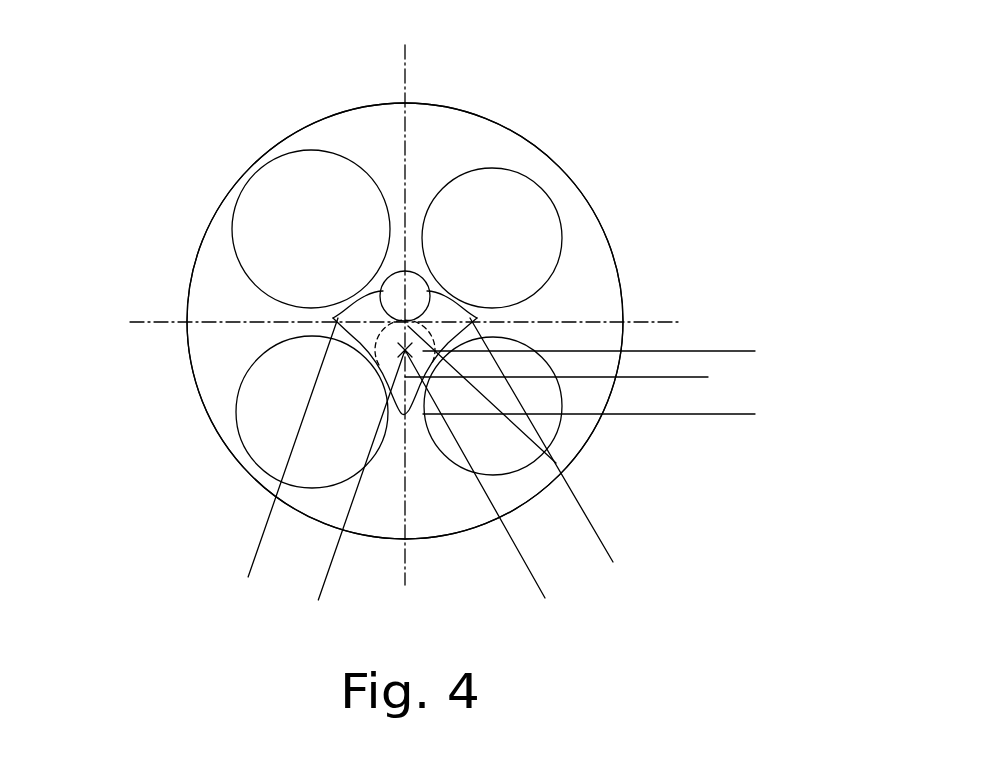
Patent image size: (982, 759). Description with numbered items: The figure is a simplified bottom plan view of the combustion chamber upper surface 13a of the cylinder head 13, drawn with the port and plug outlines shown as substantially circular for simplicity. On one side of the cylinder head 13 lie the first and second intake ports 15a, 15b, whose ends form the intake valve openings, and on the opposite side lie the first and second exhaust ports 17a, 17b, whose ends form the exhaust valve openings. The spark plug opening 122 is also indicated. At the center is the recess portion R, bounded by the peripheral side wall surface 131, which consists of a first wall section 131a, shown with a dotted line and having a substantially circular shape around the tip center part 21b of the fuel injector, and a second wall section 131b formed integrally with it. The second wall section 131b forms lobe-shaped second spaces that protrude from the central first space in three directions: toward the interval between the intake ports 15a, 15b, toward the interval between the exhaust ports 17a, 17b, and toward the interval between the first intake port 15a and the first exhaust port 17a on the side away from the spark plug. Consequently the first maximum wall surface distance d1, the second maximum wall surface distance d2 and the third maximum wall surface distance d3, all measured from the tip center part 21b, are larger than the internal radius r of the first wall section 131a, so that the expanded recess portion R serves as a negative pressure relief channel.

The cylinder head 13 is at (619, 109).
The combustion chamber upper surface 13a is at (458, 157).
The first intake port 15a is at (558, 428).
The second intake port 15b is at (546, 190).
The first exhaust port 17a is at (247, 447).
The second exhaust port 17b is at (244, 190).
The spark plug opening 122 is at (430, 302).
The peripheral side wall surface 131 is at (78, 372).
The first wall section 131a is at (375, 373).
The second wall section 131b is at (340, 338).
The tip center part 21b is at (405, 351).
The first maximum wall surface distance d1 is at (607, 552).
The second maximum wall surface distance d2 is at (323, 586).
The third maximum wall surface distance d3 is at (737, 414).
The internal radius r is at (689, 408).
The recess portion R is at (556, 463).